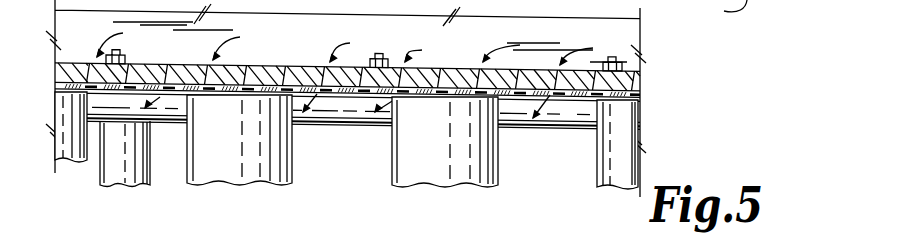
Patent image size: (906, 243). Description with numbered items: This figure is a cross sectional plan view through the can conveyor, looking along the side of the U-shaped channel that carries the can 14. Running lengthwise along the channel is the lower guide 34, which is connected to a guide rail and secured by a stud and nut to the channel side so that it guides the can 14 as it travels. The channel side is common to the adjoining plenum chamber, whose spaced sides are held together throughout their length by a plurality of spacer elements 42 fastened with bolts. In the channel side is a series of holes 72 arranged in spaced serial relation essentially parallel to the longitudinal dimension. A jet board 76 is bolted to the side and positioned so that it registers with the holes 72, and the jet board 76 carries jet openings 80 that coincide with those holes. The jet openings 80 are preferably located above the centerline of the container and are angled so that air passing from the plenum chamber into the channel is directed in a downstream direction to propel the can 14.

The can 14 is at (232, 152).
The lower guide 34 is at (349, 110).
The spacer element 42 is at (117, 163).
The hole 72 is at (363, 90).
The jet board 76 is at (347, 67).
The jet opening 80 is at (247, 66).